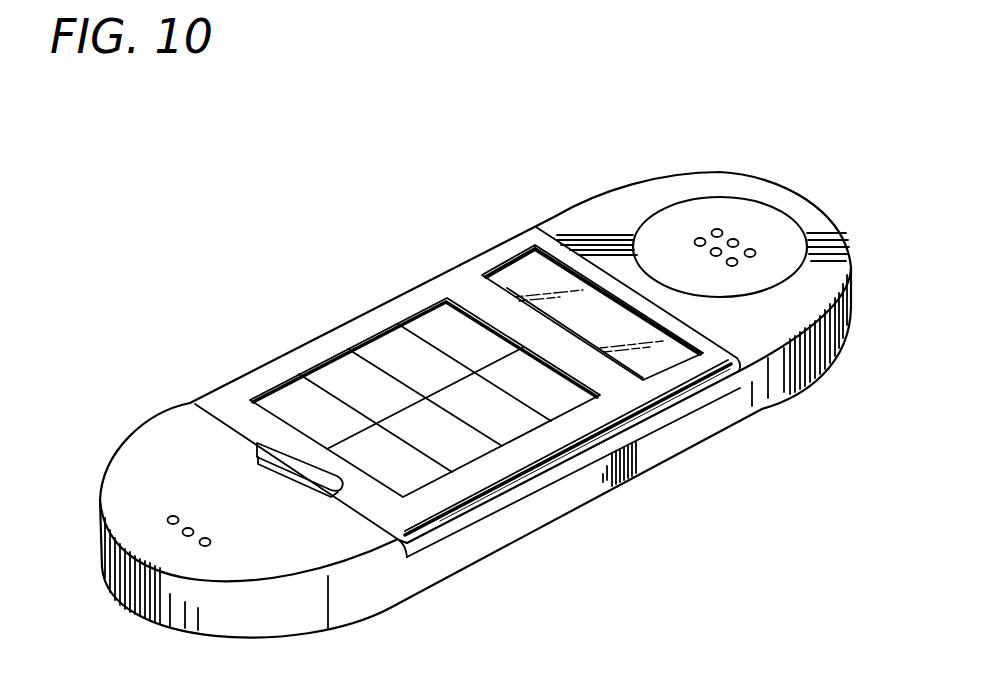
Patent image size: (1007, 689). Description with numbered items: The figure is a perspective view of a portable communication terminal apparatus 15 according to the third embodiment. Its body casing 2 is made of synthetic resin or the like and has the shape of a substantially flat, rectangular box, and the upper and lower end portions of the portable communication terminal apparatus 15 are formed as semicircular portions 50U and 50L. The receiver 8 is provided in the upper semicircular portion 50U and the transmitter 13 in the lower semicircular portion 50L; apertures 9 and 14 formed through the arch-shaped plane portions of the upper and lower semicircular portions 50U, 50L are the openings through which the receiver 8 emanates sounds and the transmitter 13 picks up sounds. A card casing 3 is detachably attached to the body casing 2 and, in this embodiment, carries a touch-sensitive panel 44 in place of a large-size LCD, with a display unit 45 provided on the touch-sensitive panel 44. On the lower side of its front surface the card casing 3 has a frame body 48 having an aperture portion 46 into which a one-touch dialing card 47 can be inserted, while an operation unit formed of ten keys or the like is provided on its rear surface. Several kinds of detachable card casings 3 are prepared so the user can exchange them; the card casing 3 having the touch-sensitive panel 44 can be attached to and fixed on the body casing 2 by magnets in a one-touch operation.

The portable communication terminal apparatus 15 is at (483, 384).
The upper semicircular portion 50U is at (810, 213).
The lower semicircular portion 50L is at (229, 618).
The body casing 2 is at (788, 371).
The card casing 3 is at (535, 451).
The receiver 8 is at (699, 212).
The apertures 9 is at (737, 238).
The transmitter 13 is at (167, 550).
The apertures 14 is at (173, 516).
The touch-sensitive panel 44 is at (641, 311).
The display unit 45 is at (502, 283).
The aperture portion 46 is at (366, 349).
The one-touch dialing card 47 is at (425, 358).
The frame body 48 is at (372, 498).